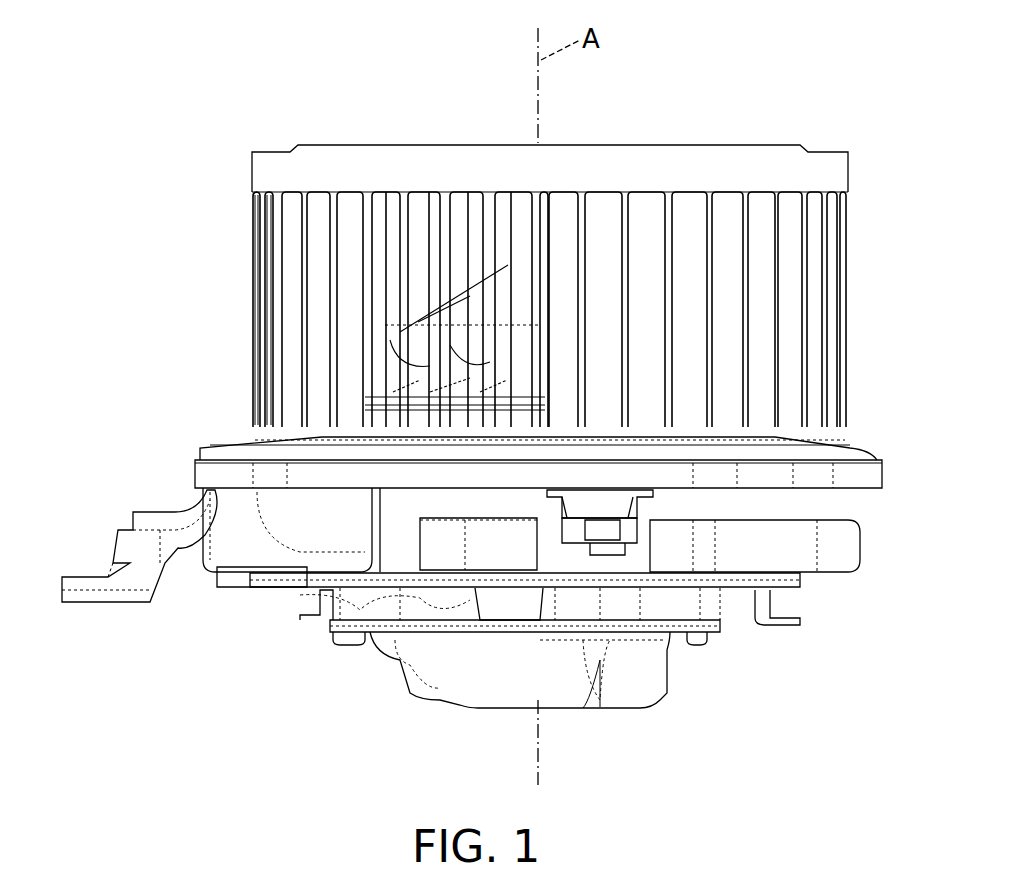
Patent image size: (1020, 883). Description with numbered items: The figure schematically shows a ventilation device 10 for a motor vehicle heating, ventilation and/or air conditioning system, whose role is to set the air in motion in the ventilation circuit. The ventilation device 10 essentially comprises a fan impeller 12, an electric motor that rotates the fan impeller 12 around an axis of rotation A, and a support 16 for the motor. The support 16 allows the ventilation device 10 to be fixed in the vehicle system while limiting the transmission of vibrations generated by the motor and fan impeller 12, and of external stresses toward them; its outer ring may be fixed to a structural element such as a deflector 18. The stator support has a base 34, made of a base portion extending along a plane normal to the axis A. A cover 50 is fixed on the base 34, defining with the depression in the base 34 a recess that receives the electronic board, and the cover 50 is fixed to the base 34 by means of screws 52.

The ventilation device 10 is at (208, 200).
The fan impeller 12 is at (353, 172).
The support 16 is at (388, 577).
The deflector 18 is at (138, 548).
The base 34 is at (620, 608).
The cover 50 is at (468, 677).
The screws 52 is at (348, 642).